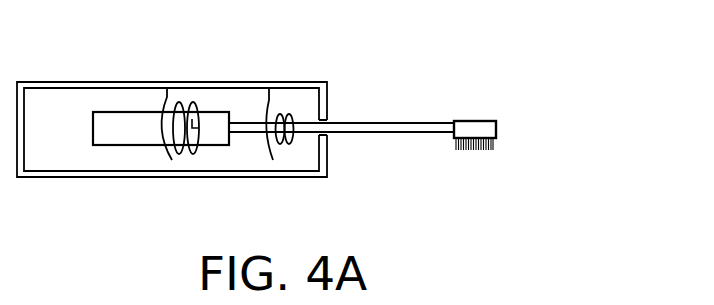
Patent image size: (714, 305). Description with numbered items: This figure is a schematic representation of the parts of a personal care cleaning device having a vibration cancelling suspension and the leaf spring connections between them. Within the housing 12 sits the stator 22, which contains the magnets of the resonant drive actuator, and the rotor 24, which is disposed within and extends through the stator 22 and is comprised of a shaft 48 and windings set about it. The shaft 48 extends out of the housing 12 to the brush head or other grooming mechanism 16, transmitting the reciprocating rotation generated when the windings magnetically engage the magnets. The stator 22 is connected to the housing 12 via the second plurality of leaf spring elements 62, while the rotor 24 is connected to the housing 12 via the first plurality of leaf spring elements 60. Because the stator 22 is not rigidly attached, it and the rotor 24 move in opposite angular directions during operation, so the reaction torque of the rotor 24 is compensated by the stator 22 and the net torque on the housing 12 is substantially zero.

The housing 12 is at (87, 83).
The stator 22 is at (133, 112).
The rotor 24 is at (266, 123).
The shaft 48 is at (405, 133).
The grooming mechanism 16 is at (479, 150).
The second plurality of leaf spring elements 62 is at (172, 160).
The first plurality of leaf spring elements 60 is at (273, 160).